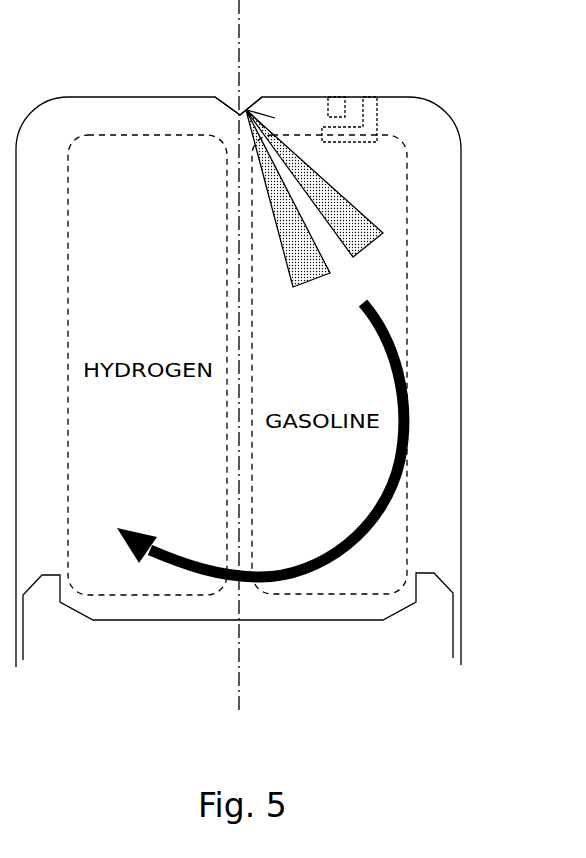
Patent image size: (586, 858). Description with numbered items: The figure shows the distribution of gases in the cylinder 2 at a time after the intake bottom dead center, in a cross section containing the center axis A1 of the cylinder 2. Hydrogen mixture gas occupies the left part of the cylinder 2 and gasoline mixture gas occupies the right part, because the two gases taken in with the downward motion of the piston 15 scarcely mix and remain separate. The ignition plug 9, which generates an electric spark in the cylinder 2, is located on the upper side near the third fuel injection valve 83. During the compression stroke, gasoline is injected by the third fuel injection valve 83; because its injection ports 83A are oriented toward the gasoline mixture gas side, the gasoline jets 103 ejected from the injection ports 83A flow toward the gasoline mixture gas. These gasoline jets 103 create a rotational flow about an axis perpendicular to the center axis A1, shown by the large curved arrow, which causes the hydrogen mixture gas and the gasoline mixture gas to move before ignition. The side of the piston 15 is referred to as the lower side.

The cylinder 2 is at (434, 290).
The ignition plug 9 is at (380, 121).
The piston 15 is at (440, 620).
The third fuel injection valve 83 is at (247, 102).
The injection ports 83A is at (258, 118).
The gasoline jets 103 is at (303, 253).
The center axis A1 is at (241, 688).